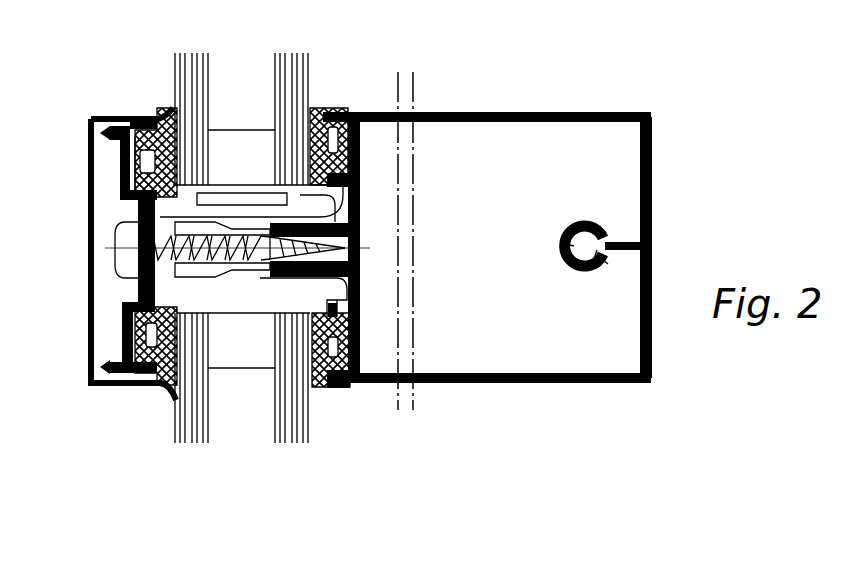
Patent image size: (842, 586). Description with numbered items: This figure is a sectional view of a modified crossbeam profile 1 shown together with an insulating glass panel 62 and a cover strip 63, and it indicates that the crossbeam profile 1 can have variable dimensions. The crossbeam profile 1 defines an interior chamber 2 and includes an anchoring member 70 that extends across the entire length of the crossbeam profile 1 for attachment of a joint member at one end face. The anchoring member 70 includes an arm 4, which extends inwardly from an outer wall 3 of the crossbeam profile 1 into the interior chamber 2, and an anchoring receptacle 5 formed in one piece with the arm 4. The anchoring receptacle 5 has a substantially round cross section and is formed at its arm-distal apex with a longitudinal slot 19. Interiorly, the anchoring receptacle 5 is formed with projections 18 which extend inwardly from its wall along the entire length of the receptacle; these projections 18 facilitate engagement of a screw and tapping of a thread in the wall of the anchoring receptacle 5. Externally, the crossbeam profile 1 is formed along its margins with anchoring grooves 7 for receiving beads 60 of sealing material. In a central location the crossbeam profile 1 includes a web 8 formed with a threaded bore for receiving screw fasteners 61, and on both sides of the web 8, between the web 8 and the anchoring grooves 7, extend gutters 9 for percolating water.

The crossbeam profile 1 is at (505, 110).
The interior chamber 2 is at (522, 150).
The outer wall 3 is at (652, 178).
The arm 4 is at (622, 232).
The anchoring receptacle 5 is at (589, 226).
The anchoring grooves 7 is at (343, 390).
The web 8 is at (287, 277).
The gutters 9 is at (360, 303).
The projections 18 is at (585, 270).
The longitudinal slot 19 is at (570, 247).
The beads 60 is at (316, 108).
The screw fasteners 61 is at (125, 257).
The insulating glass panel 62 is at (172, 417).
The cover strip 63 is at (82, 338).
The anchoring member 70 is at (608, 263).